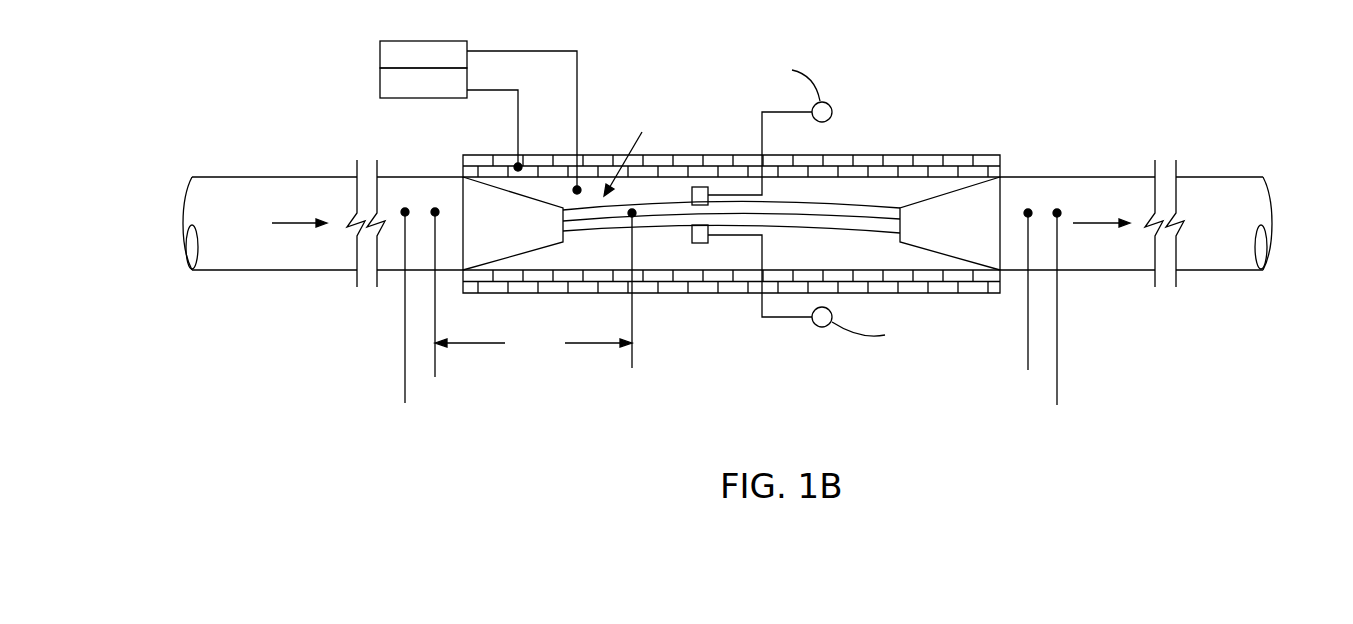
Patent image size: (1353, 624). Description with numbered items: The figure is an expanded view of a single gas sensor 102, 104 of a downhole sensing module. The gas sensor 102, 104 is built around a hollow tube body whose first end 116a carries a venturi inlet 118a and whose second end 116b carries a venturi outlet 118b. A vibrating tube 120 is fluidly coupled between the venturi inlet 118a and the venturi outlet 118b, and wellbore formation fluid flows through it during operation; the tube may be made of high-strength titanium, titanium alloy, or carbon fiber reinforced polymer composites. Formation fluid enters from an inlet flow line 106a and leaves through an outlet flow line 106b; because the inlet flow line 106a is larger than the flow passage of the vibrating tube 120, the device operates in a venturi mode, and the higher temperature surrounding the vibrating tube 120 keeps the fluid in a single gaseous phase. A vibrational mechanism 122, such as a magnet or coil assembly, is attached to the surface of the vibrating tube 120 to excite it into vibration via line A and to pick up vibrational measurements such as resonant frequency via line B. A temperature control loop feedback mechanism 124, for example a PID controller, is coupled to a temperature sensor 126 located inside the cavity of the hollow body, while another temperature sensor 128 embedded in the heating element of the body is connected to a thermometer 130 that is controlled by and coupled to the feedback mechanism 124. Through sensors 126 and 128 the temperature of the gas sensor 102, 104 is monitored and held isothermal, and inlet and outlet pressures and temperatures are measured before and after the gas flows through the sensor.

The gas sensor 102 is at (740, 237).
The gas sensor 104 is at (740, 237).
The inlet flow line 106a is at (228, 272).
The outlet flow line 106b is at (1237, 270).
The first end of hollow tube body 116a is at (462, 165).
The second end of hollow tube body 116b is at (1000, 162).
The venturi inlet 118a is at (520, 293).
The venturi outlet 118b is at (940, 248).
The vibrating tube 120 is at (840, 206).
The vibrational mechanism 122 is at (700, 243).
The temperature control loop feedback mechanism 124 is at (380, 53).
The temperature sensor 126 is at (578, 188).
The temperature sensor 128 is at (519, 165).
The thermometer 130 is at (380, 82).